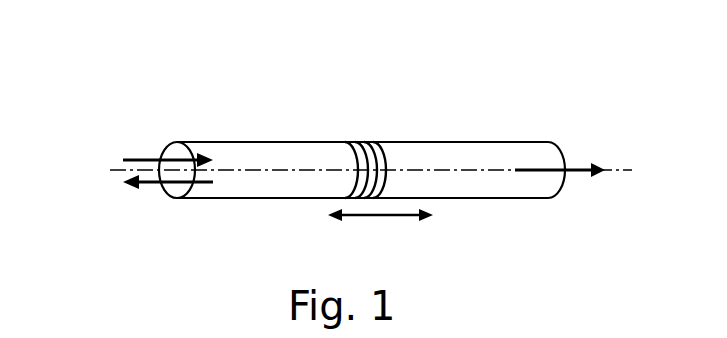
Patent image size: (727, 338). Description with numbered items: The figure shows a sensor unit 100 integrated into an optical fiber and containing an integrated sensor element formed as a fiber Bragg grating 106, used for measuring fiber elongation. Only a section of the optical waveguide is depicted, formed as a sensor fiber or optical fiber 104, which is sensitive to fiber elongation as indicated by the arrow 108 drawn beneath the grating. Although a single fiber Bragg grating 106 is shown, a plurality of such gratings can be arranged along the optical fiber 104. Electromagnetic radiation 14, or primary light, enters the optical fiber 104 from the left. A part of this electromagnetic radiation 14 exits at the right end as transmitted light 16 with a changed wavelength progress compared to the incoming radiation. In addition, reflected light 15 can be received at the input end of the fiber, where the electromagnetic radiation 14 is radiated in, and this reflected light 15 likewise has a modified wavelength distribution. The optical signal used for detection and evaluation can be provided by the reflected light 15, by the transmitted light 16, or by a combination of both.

The sensor unit 100 is at (631, 32).
The optical fiber 104 is at (481, 150).
The fiber Bragg grating 106 is at (368, 134).
The arrow 108 is at (388, 216).
The electromagnetic radiation 14 is at (145, 160).
The reflected light 15 is at (150, 182).
The transmitted light 16 is at (574, 167).